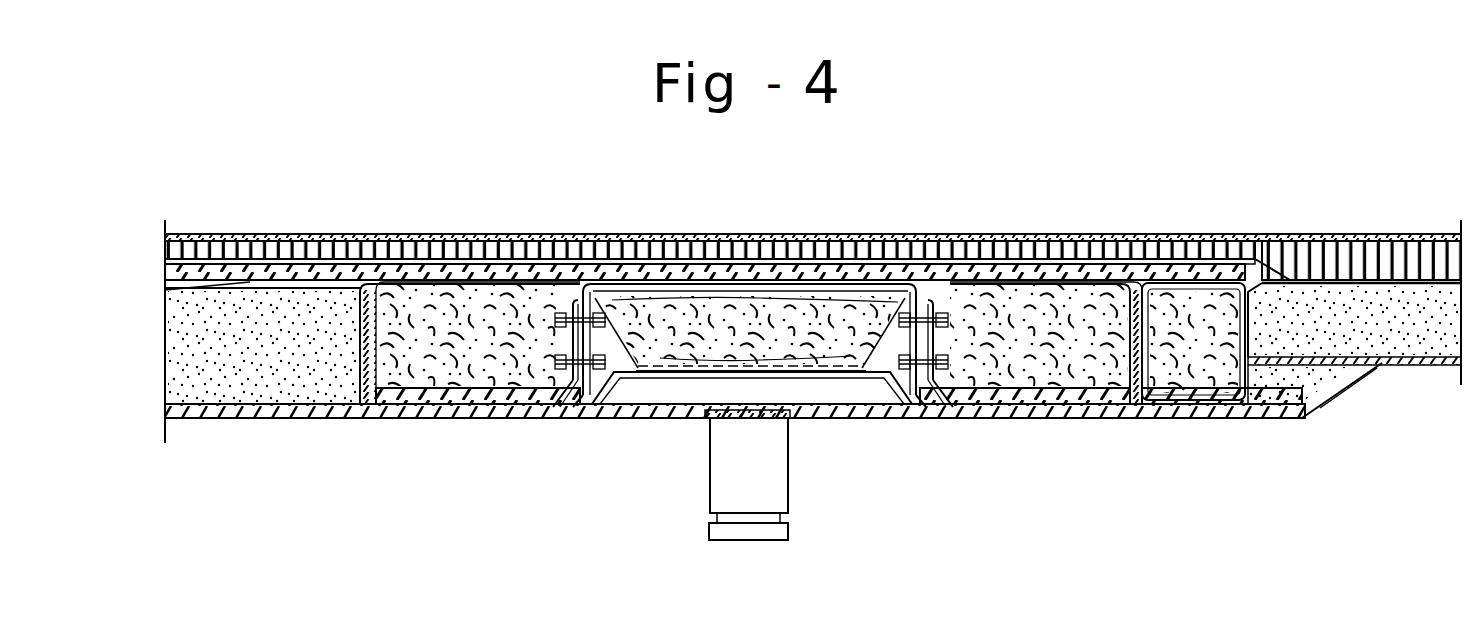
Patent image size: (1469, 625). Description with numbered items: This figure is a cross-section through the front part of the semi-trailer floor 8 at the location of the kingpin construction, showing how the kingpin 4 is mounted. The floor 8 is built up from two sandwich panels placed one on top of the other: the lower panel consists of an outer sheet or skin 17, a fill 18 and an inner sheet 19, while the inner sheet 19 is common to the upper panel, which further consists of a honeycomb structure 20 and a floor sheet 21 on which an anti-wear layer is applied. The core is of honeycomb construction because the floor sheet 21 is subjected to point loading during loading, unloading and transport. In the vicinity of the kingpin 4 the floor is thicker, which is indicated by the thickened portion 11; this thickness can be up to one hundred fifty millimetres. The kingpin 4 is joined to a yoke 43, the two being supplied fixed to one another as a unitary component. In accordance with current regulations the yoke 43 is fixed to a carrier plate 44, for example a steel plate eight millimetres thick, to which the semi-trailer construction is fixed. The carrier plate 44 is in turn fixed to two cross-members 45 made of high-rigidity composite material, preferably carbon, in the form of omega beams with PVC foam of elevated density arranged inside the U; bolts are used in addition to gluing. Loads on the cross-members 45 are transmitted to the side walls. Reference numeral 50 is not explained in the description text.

The kingpin 4 is at (741, 498).
The floor 8 is at (951, 214).
The thickened floor portion 11 is at (368, 445).
The outer sheet or skin 17 is at (1358, 372).
The fill 18 is at (1432, 330).
The inner sheet 19 is at (1413, 238).
The honeycomb structure 20 is at (1362, 240).
The floor sheet 21 is at (1262, 240).
The yoke 43 is at (828, 400).
The carrier plate 44 is at (1000, 404).
The cross-members 45 is at (502, 404).
The insulating filler 50 is at (690, 328).